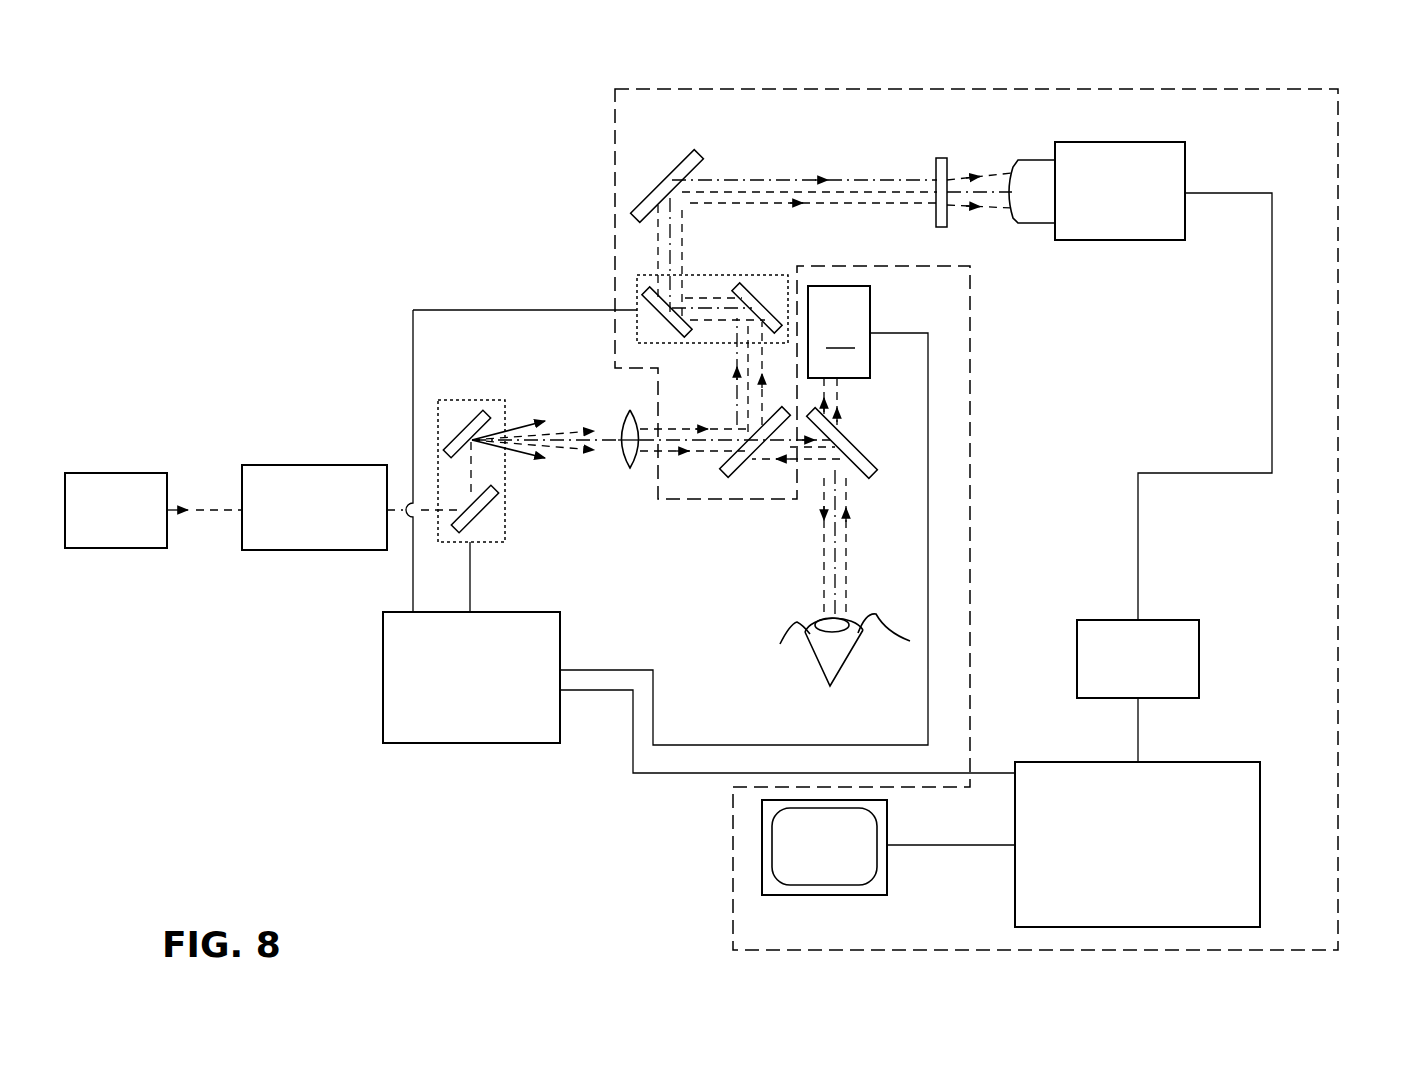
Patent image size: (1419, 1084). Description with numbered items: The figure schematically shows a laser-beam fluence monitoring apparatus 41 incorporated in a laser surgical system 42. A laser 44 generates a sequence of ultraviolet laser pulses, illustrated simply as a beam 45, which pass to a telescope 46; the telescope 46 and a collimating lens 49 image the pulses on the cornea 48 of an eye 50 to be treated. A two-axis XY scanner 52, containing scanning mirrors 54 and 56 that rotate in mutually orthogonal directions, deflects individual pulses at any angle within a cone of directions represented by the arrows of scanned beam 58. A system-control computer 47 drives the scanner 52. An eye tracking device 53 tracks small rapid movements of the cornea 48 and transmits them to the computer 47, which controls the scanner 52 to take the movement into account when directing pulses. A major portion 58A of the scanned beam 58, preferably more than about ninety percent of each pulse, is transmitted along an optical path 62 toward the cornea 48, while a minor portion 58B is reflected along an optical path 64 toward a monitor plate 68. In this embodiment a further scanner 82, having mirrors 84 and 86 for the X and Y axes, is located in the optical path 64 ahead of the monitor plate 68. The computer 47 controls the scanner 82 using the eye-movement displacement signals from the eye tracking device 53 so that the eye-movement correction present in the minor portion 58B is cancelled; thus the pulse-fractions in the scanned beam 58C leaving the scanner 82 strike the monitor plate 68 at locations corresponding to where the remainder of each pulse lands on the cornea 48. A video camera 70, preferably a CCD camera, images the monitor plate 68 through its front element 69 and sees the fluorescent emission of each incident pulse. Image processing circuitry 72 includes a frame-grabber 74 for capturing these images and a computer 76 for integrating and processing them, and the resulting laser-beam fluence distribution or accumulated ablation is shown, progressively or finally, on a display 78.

The laser-beam fluence monitoring apparatus 41 is at (613, 158).
The laser surgical system 42 is at (440, 872).
The laser 44 is at (130, 549).
The beam 45 is at (222, 512).
The telescope 46 is at (276, 551).
The system-control computer 47 is at (487, 745).
The cornea 48 is at (835, 622).
The collimating lens 49 is at (625, 468).
The eye 50 is at (800, 662).
The two axis (XY) scanner 52 is at (510, 516).
The eye tracking device 53 is at (839, 355).
The scanning mirror 54 is at (478, 519).
The scanning mirror 56 is at (469, 425).
The scanned beam 58 is at (521, 421).
The major portion of scanned beam 58A is at (824, 578).
The minor portion of scanned beam 58B is at (737, 352).
The scanned beam leaving scanner 58C is at (762, 205).
The optical path 62 is at (847, 498).
The optical path 64 is at (672, 247).
The monitor plate 68 is at (947, 160).
The camera lens 69 is at (957, 206).
The video camera 70 is at (1130, 243).
The image processing circuitry 72 is at (1240, 728).
The frame-grabber 74 is at (1160, 620).
The computer 76 is at (1262, 820).
The display 78 is at (808, 896).
The scanner 82 is at (645, 270).
The mirror 84 is at (752, 290).
The mirror 86 is at (650, 295).